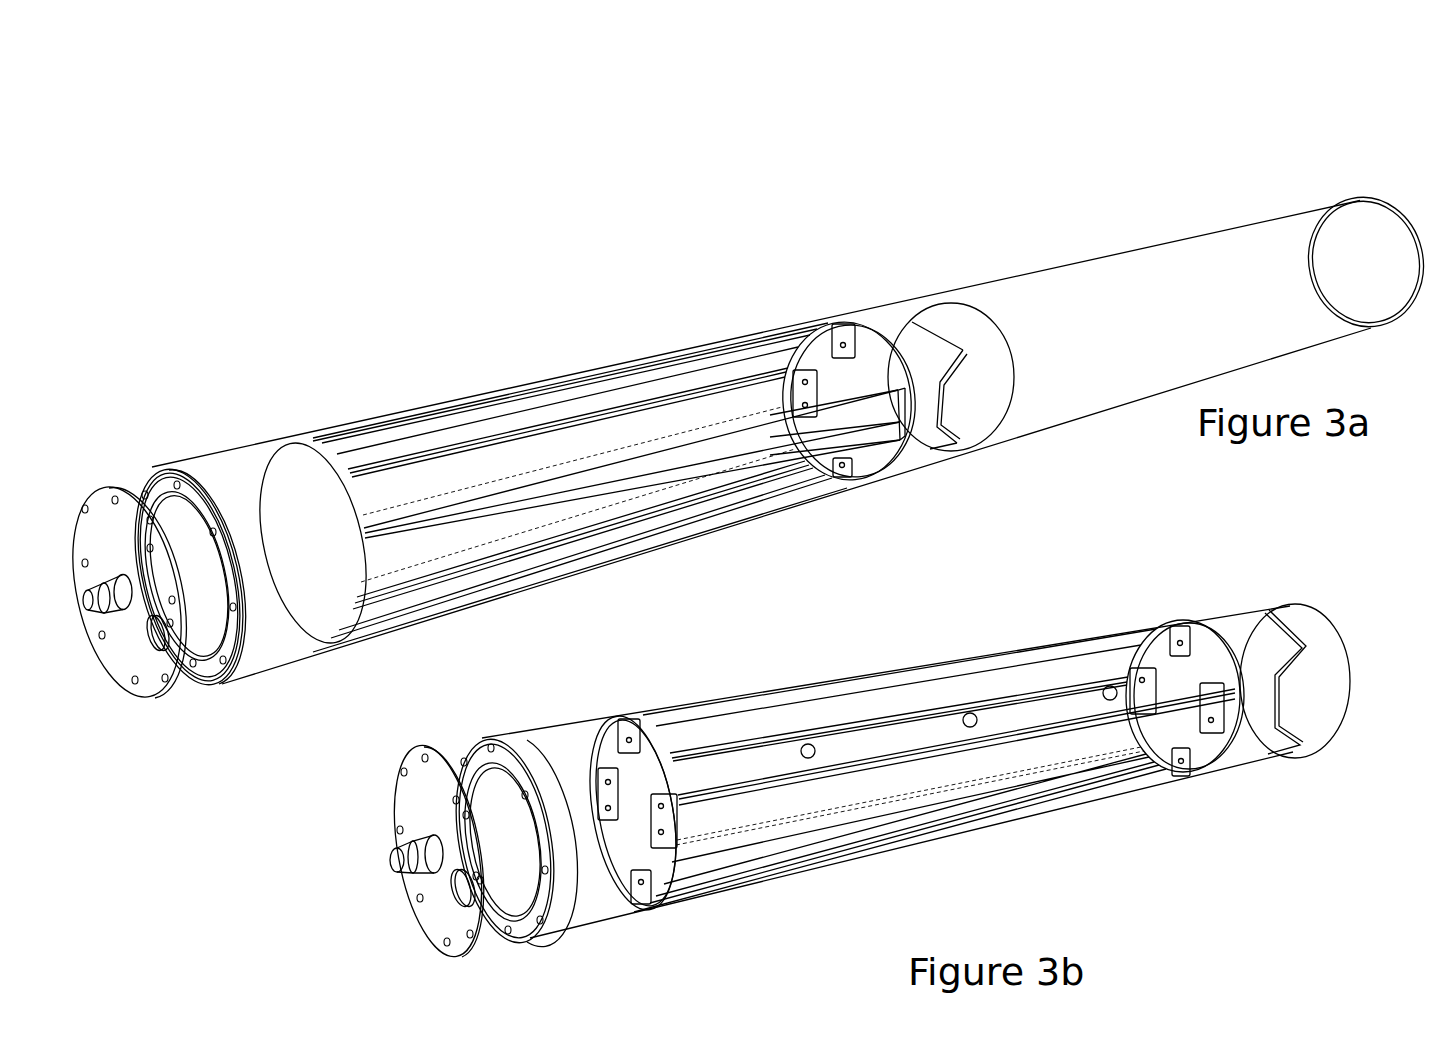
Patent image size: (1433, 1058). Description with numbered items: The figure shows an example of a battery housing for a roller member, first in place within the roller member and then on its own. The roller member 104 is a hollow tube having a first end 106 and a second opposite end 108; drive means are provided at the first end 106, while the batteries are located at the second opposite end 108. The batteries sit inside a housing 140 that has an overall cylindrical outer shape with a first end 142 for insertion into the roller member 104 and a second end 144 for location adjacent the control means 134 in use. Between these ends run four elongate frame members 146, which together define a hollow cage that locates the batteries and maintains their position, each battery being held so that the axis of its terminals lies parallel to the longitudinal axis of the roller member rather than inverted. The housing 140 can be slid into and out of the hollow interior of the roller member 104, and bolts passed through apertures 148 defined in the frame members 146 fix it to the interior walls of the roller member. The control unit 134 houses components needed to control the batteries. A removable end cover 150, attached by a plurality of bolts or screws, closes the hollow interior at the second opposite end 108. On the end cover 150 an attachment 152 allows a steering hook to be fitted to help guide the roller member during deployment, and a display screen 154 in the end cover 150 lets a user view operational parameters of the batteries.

In FIG. 3A, the roller member 104 is at (1135, 283).
In FIG. 3A, the first end 106 is at (1364, 193).
In FIG. 3A, the second opposite end 108 is at (141, 465).
In FIG. 3B, the second opposite end 108 is at (459, 741).
In FIG. 3A, the control means 134 is at (234, 479).
In FIG. 3B, the control means 134 is at (552, 765).
In FIG. 3A, the housing 140 is at (663, 433).
In FIG. 3B, the housing 140 is at (963, 717).
In FIG. 3A, the first end 142 is at (951, 377).
In FIG. 3B, the first end 142 is at (1208, 601).
In FIG. 3A, the second end 144 is at (846, 401).
In FIG. 3B, the second end 144 is at (622, 694).
In FIG. 3B, the elongate frame members 146 is at (895, 735).
In FIG. 3B, the apertures 148 is at (808, 744).
In FIG. 3A, the removable end cover 150 is at (120, 652).
In FIG. 3B, the removable end cover 150 is at (410, 808).
In FIG. 3A, the attachment 152 is at (107, 594).
In FIG. 3B, the attachment 152 is at (398, 856).
In FIG. 3A, the display screen 154 is at (164, 642).
In FIG. 3B, the display screen 154 is at (487, 930).